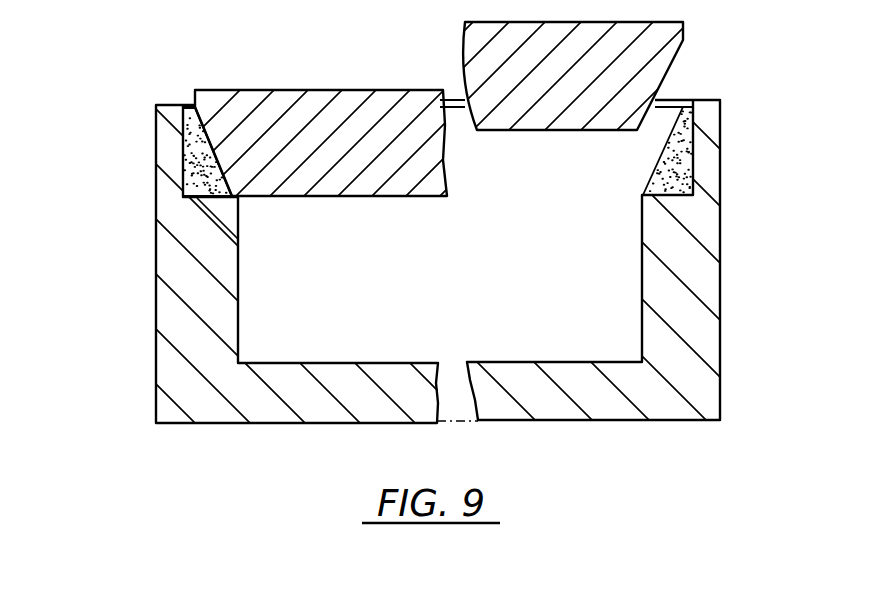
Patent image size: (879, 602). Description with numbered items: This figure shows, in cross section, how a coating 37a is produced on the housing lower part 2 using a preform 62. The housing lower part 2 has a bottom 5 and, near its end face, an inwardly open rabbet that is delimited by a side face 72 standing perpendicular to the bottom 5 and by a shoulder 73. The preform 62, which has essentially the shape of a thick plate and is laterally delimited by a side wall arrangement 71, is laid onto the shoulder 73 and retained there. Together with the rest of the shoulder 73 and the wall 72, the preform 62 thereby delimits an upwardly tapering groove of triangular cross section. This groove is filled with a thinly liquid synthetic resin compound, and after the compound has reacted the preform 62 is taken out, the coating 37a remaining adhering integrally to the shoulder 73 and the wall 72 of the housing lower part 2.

The housing lower part 2 is at (439, 250).
The bottom 5 is at (333, 413).
The preform 62 is at (282, 97).
The side wall arrangement 71 is at (675, 63).
The side face 72 is at (185, 140).
The coating 37a is at (197, 178).
The shoulder 73 is at (197, 200).